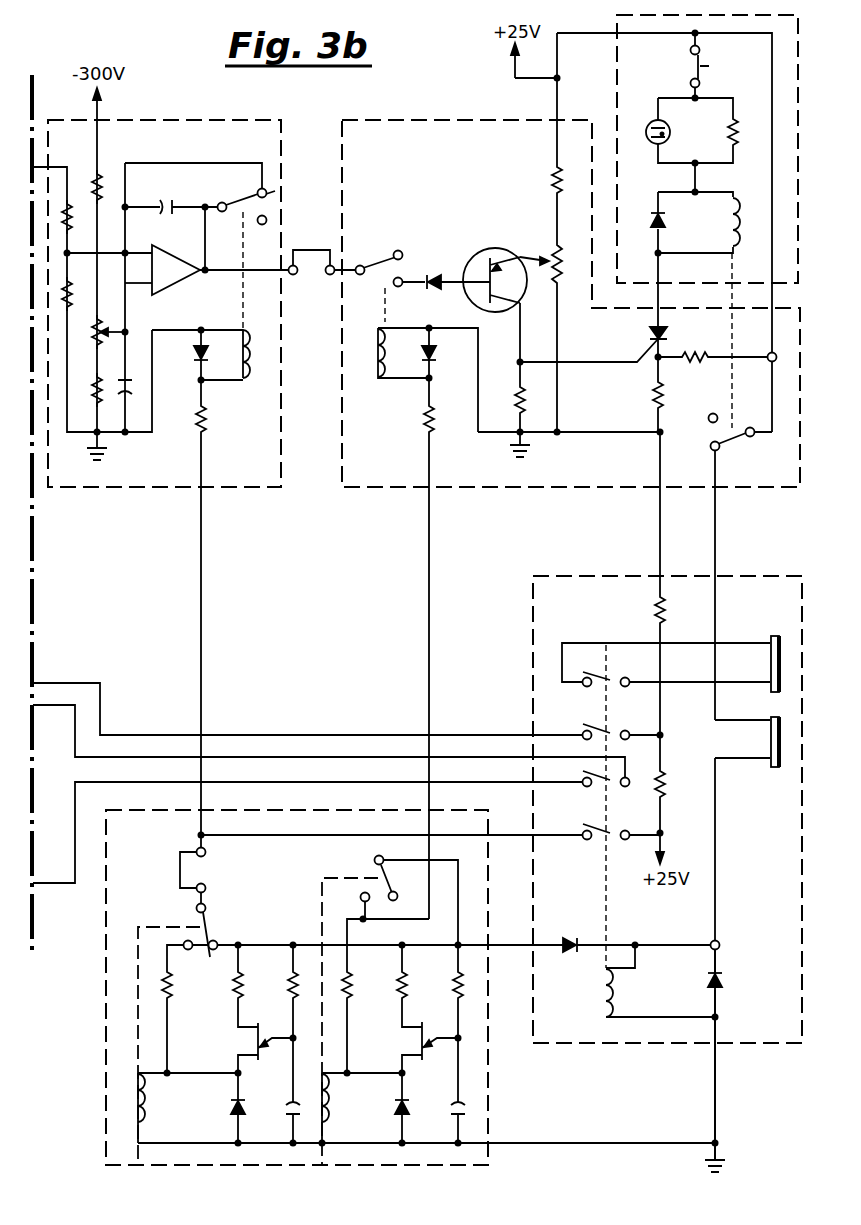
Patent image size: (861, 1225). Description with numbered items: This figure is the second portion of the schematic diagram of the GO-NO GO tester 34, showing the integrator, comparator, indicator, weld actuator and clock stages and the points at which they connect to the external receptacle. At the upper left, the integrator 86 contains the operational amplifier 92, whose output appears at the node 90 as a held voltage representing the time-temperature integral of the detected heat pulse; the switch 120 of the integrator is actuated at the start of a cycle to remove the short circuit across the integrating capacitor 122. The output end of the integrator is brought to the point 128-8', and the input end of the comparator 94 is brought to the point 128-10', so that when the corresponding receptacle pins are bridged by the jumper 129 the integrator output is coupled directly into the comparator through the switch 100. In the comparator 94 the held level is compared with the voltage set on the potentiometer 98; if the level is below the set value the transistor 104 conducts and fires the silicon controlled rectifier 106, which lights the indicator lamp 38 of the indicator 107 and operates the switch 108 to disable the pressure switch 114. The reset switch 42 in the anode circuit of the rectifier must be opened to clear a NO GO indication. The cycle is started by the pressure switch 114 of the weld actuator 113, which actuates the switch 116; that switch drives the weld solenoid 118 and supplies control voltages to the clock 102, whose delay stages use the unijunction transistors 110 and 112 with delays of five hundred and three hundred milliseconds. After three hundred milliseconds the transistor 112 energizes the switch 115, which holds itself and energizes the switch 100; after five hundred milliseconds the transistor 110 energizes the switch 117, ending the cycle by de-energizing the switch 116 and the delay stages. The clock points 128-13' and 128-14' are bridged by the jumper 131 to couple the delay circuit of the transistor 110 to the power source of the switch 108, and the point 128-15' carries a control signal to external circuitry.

The tester 34 is at (318, 693).
The indicator lamp 38 is at (650, 122).
The reset switch 42 is at (701, 57).
The integrator 86 is at (250, 120).
The node 90 is at (208, 266).
The operational amplifier 92 is at (172, 257).
The comparator 94 is at (405, 120).
The potentiometer 98 is at (538, 256).
The switch 100 is at (386, 318).
The clock 102 is at (106, 978).
The transistor 104 is at (478, 255).
The silicon controlled rectifier 106 is at (648, 336).
The indicator 107 is at (617, 65).
The switch 108 is at (729, 327).
The unijunction transistor 110 is at (262, 1036).
The unijunction transistor 112 is at (424, 1037).
The weld actuator 113 is at (567, 576).
The pressure switch 114 is at (770, 770).
The switch 115 is at (322, 910).
The switch 116 is at (608, 912).
The switch 117 is at (162, 925).
The weld solenoid 118 is at (770, 636).
The switch 120 is at (243, 303).
The integrating capacitor 122 is at (170, 203).
The point 128-8' is at (315, 239).
The point 128-10' is at (315, 295).
The point 128-13' is at (248, 852).
The point 128-14' is at (248, 888).
The point 128-15' is at (759, 926).
The jumper 129 is at (318, 250).
The jumper 131 is at (180, 872).